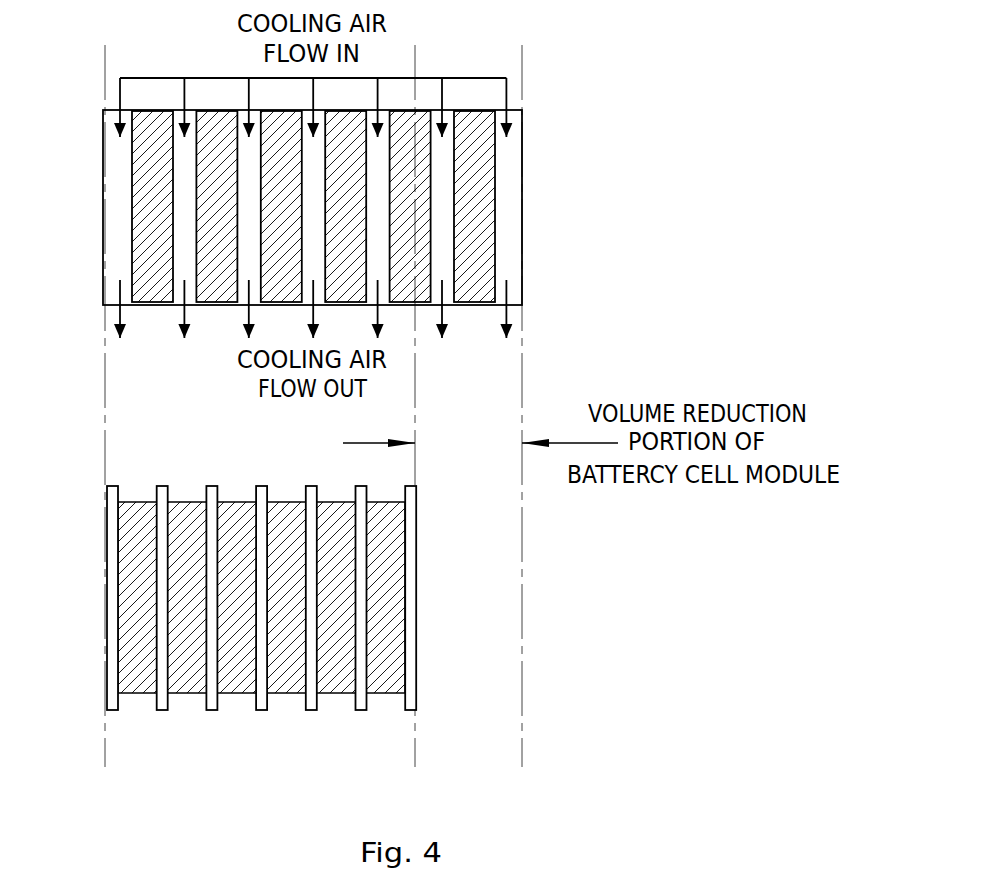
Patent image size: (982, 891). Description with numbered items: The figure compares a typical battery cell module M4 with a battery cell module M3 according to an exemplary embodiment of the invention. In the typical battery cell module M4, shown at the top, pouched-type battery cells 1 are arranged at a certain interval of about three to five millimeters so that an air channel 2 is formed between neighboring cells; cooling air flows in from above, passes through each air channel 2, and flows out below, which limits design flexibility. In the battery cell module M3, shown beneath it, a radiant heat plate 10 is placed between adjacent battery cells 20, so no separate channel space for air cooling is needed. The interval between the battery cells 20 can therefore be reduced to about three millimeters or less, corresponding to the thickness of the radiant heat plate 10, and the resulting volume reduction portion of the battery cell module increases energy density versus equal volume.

The pouched-type battery cell 1 is at (148, 182).
The air channel 2 is at (187, 245).
The radiant heat plate 10 is at (162, 565).
The battery cell 20 is at (138, 614).
The typical battery cell module M4 is at (592, 206).
The battery cell module M3 is at (592, 624).